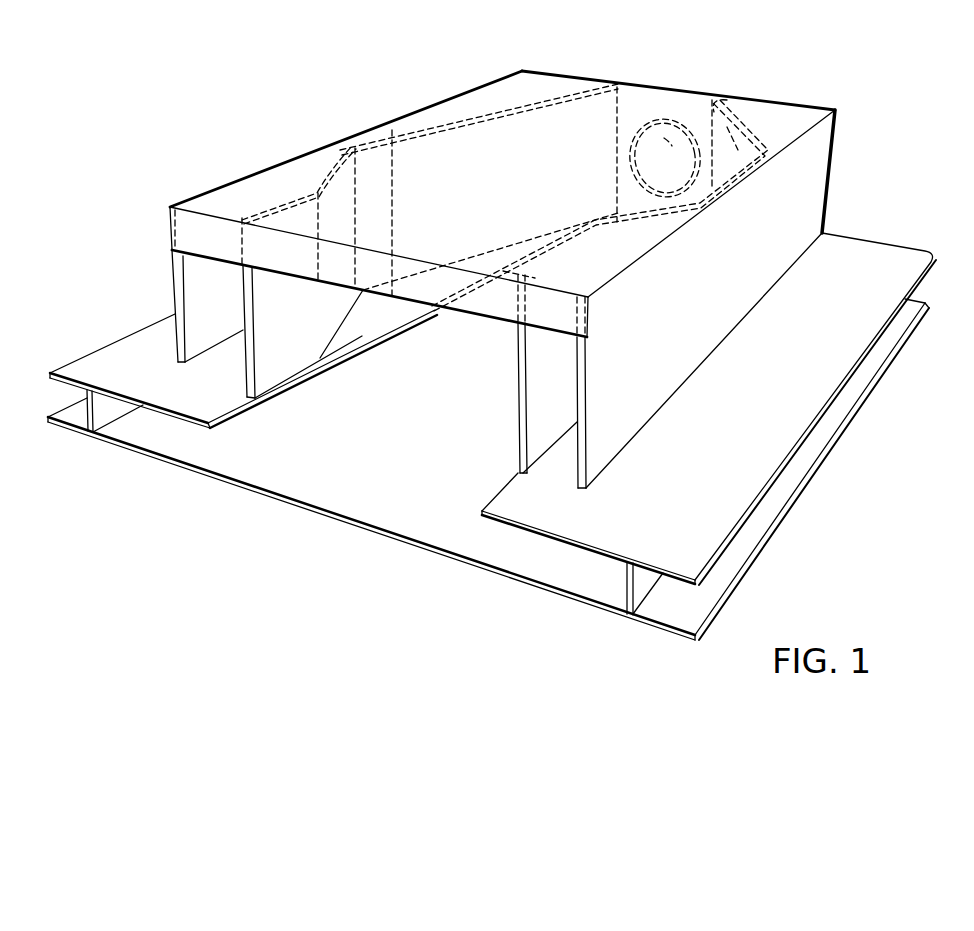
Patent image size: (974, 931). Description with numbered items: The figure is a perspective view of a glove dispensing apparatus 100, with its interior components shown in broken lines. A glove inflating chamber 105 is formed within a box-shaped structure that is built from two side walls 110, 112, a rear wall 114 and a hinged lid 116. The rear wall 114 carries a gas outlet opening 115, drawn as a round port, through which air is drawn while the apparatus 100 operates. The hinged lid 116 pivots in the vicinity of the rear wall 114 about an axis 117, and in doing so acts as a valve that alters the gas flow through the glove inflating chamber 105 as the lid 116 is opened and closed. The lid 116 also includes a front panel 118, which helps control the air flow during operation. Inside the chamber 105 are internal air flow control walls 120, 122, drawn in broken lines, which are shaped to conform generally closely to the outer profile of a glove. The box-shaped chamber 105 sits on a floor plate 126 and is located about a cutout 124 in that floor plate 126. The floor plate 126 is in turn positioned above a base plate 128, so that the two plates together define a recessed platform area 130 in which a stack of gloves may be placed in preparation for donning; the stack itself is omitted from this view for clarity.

The glove dispensing apparatus 100 is at (158, 60).
The glove inflating chamber 105 is at (475, 130).
The side wall 110 is at (808, 190).
The side wall 112 is at (192, 272).
The rear wall 114 is at (792, 127).
The gas outlet opening 115 is at (652, 113).
The hinged lid 116 is at (280, 183).
The axis 117 is at (837, 110).
The front panel 118 is at (200, 238).
The internal air flow control wall 120 is at (540, 132).
The internal air flow control wall 122 is at (730, 92).
The cutout 124 is at (502, 487).
The floor plate 126 is at (580, 513).
The base plate 128 is at (217, 485).
The recessed platform area 130 is at (335, 470).